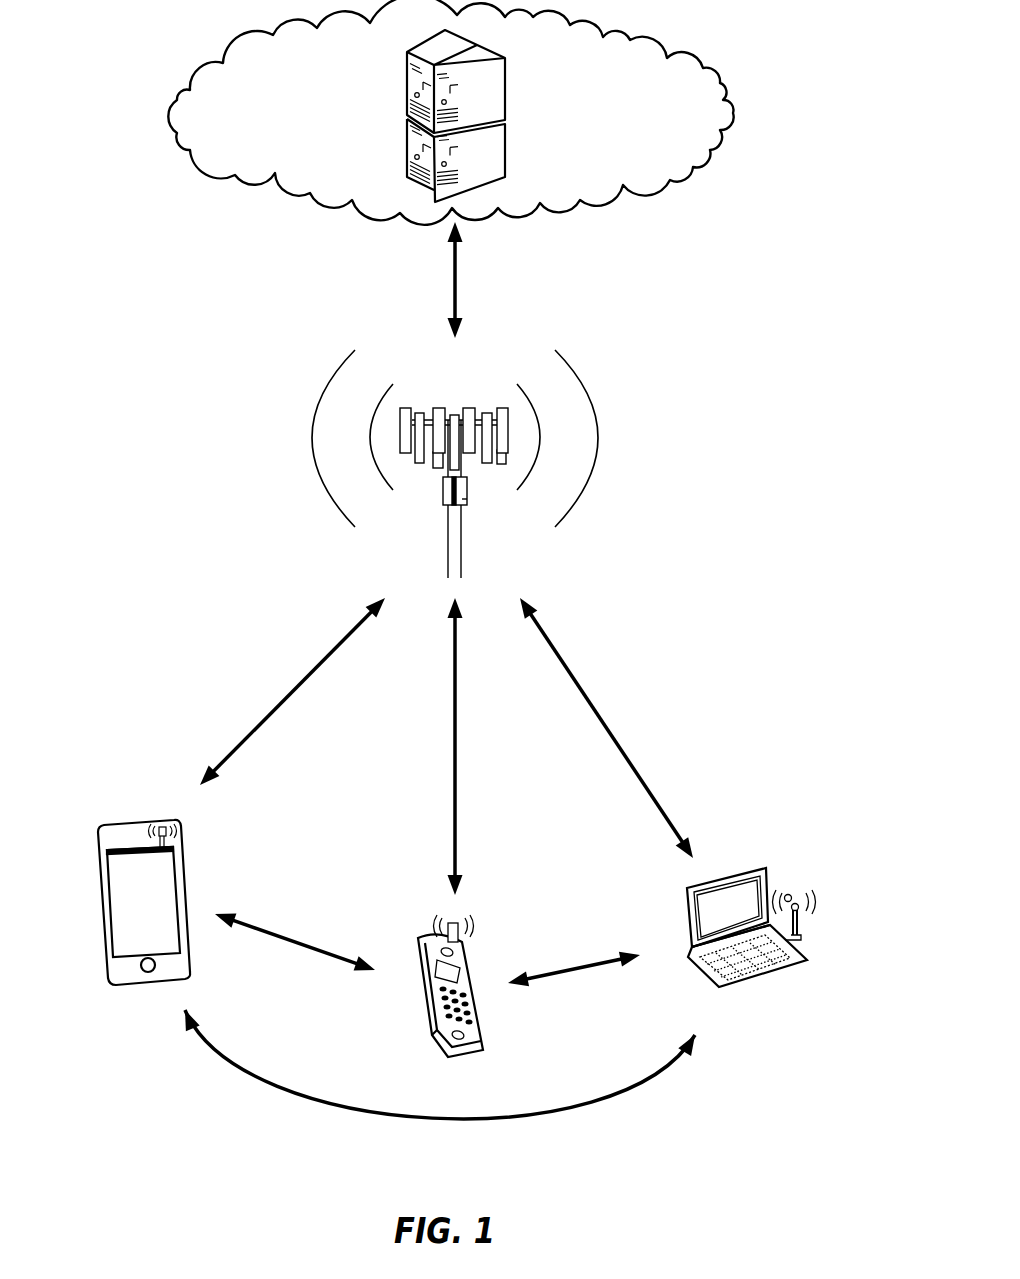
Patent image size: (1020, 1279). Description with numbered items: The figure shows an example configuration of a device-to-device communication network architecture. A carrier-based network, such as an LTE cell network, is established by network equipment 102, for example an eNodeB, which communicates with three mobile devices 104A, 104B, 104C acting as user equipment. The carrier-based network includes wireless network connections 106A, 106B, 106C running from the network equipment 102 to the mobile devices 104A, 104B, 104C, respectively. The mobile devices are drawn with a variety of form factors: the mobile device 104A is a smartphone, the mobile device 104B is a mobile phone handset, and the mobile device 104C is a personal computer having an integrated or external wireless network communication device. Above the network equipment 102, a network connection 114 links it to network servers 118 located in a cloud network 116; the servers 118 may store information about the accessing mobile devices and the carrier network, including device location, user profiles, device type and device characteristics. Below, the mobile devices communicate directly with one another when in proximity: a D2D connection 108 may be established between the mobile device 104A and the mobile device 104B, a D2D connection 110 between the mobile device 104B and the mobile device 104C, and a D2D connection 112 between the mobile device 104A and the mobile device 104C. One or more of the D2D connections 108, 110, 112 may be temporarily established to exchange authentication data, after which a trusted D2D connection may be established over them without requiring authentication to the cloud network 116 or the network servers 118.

The network equipment 102 is at (467, 493).
The mobile device 104A is at (190, 966).
The mobile device 104B is at (483, 1055).
The mobile device 104C is at (790, 970).
The wireless network connection 106A is at (262, 722).
The wireless network connection 106B is at (457, 775).
The wireless network connection 106C is at (628, 760).
The D2D connection 108 is at (290, 938).
The D2D connection 110 is at (602, 961).
The D2D connection 112 is at (318, 1104).
The network connection 114 is at (457, 268).
The cloud network 116 is at (672, 182).
The network servers 118 is at (505, 78).